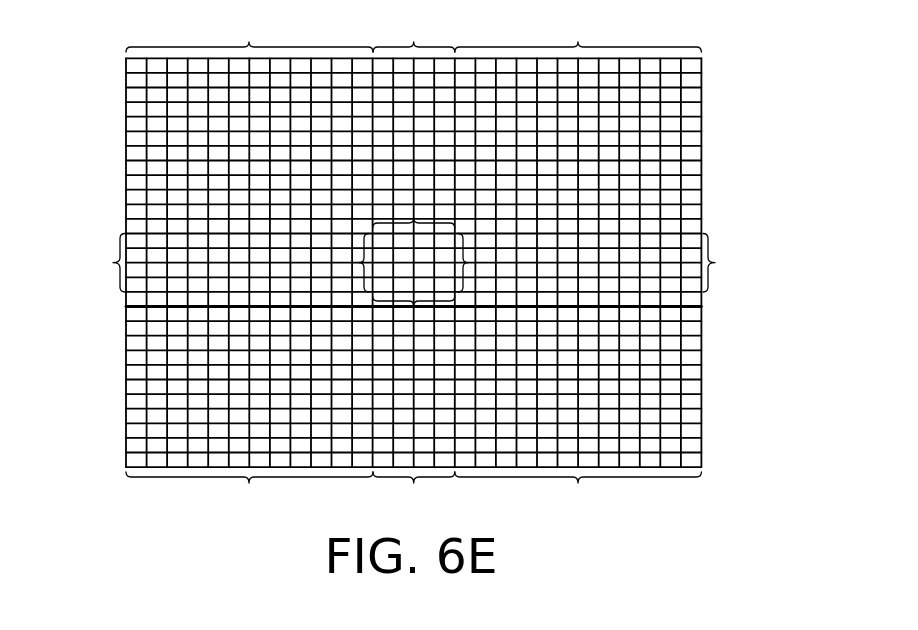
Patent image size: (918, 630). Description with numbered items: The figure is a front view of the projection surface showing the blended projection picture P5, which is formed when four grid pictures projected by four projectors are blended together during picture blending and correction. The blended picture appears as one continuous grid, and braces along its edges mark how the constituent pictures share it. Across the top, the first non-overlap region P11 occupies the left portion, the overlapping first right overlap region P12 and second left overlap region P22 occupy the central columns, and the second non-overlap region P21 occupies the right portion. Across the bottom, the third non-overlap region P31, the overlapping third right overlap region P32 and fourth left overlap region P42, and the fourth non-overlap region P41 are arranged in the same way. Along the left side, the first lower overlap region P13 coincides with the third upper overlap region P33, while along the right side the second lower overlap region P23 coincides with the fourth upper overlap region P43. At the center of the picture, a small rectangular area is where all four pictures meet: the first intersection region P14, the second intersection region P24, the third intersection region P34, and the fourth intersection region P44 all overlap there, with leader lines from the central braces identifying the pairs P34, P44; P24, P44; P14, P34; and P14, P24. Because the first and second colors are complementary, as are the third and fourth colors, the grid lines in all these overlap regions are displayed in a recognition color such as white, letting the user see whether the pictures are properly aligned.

The blended projection picture P5 is at (113, 43).
The first non-overlap region P11 is at (249, 31).
The first right overlap region P12 is at (414, 31).
The second left overlap region P22 is at (414, 31).
The second non-overlap region P21 is at (578, 31).
The third non-overlap region P31 is at (249, 494).
The third right overlap region P32 is at (415, 494).
The fourth left overlap region P42 is at (415, 494).
The fourth non-overlap region P41 is at (578, 494).
The first lower overlap region P13 is at (73, 263).
The third upper overlap region P33 is at (73, 263).
The second lower overlap region P23 is at (754, 263).
The fourth upper overlap region P43 is at (754, 263).
The third intersection region P34 is at (609, 172).
The fourth intersection region P44 is at (414, 219).
The second intersection region P24 is at (362, 263).
The first intersection region P14 is at (467, 263).